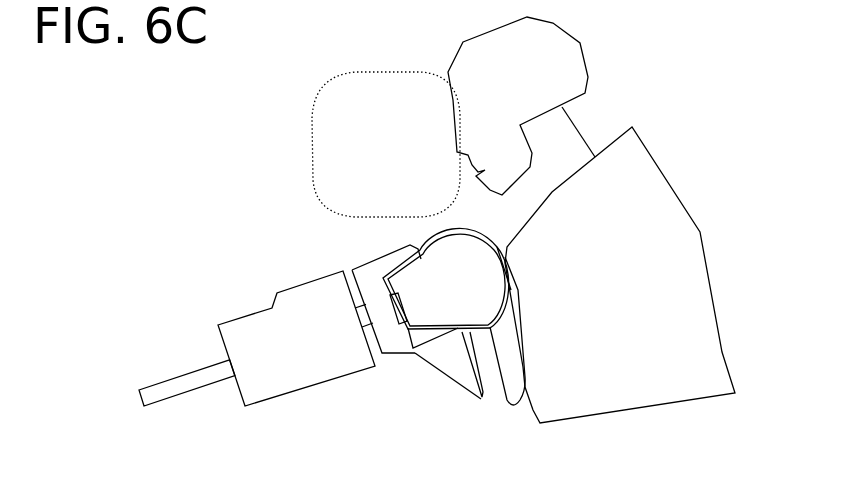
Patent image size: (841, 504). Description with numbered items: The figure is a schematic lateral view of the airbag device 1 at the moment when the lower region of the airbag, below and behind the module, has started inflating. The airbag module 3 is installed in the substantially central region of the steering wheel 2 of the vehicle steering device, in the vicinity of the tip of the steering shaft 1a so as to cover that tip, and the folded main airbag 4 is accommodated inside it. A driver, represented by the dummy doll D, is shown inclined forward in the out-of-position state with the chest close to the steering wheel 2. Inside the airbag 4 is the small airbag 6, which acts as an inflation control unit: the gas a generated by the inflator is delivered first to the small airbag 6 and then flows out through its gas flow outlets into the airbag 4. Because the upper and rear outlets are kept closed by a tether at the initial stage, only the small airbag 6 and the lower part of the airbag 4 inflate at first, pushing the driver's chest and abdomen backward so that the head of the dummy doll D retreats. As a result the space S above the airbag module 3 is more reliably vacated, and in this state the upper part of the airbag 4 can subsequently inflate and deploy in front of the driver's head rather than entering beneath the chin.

The airbag device 1 is at (309, 318).
The steering shaft 1a is at (200, 367).
The steering wheel 2 is at (460, 378).
The airbag module 3 is at (452, 297).
The airbag 4 is at (497, 243).
The small airbag 6 is at (470, 329).
The dummy doll D is at (450, 40).
The space S is at (392, 154).
The gas a is at (497, 333).